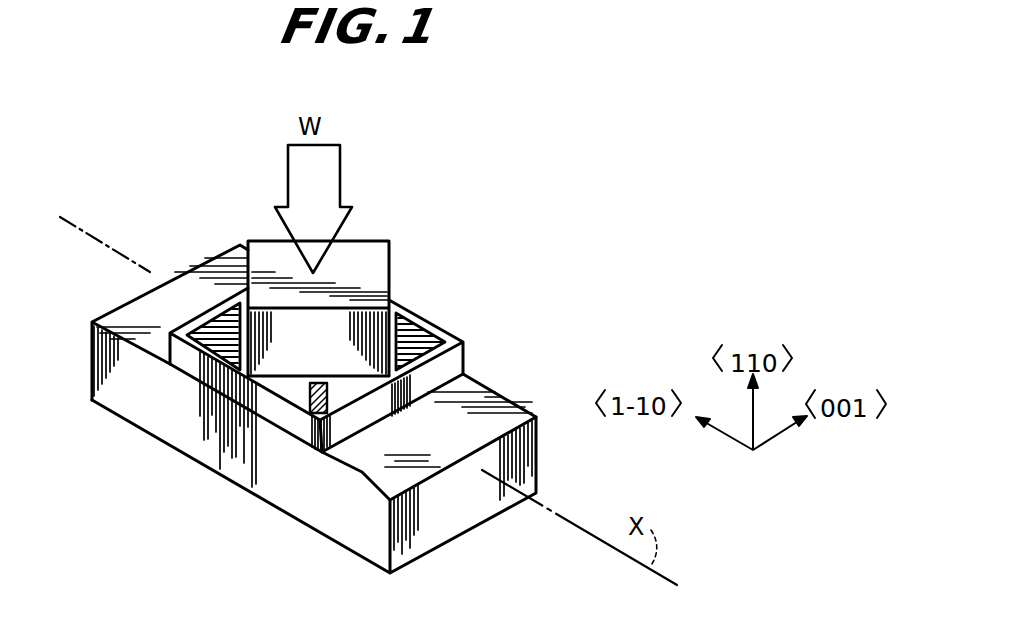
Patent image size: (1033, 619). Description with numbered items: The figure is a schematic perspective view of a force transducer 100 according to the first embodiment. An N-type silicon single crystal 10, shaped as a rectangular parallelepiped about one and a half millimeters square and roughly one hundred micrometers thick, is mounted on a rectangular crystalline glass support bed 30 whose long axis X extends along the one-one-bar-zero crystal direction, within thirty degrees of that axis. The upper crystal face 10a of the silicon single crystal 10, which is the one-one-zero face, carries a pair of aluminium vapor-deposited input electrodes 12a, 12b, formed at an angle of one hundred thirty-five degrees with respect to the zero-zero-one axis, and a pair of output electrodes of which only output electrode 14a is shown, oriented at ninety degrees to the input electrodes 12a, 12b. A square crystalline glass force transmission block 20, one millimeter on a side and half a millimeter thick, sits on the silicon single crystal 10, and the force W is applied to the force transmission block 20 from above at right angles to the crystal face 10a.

The N-type silicon single crystal 10 is at (250, 402).
The (110) face 10a is at (413, 392).
The input electrode 12a is at (410, 340).
The input electrode 12b is at (203, 327).
The output electrode 14a is at (317, 447).
The force transmission block 20 is at (372, 258).
The support bed 30 is at (333, 520).
The force transducer 100 is at (529, 340).